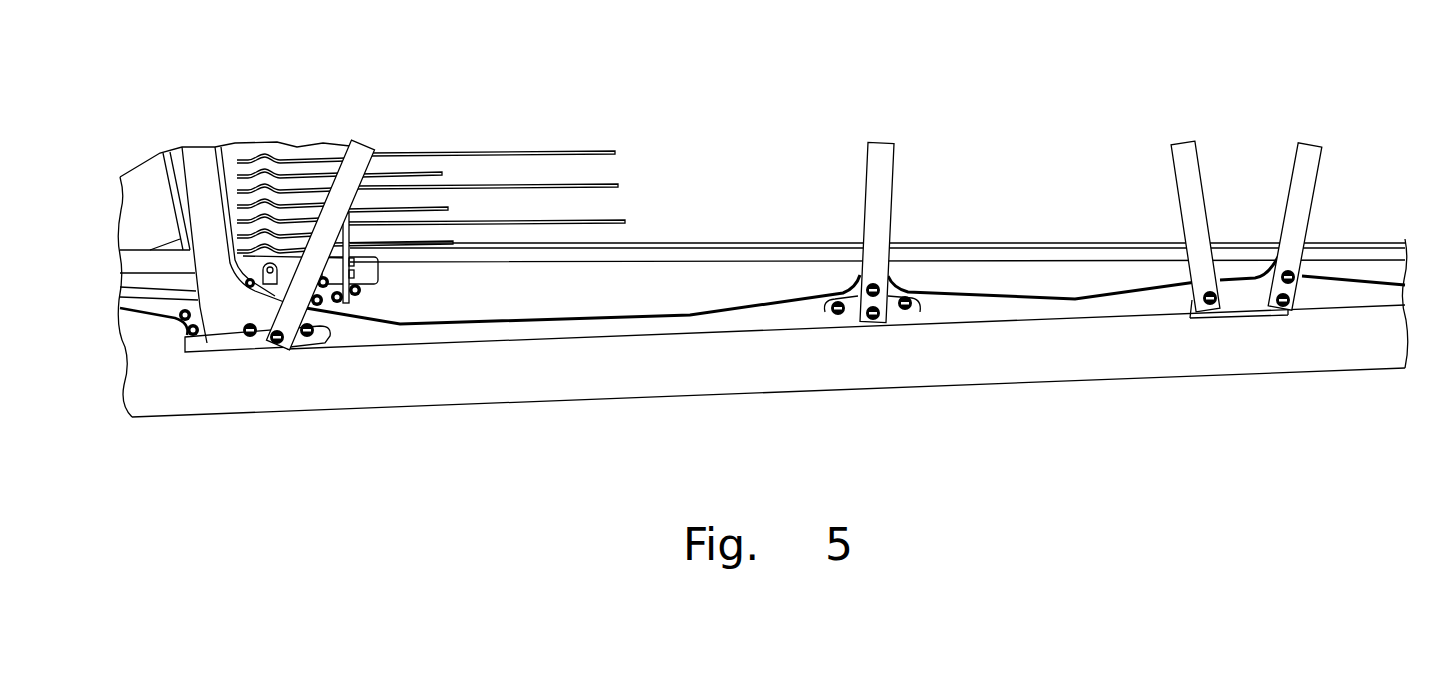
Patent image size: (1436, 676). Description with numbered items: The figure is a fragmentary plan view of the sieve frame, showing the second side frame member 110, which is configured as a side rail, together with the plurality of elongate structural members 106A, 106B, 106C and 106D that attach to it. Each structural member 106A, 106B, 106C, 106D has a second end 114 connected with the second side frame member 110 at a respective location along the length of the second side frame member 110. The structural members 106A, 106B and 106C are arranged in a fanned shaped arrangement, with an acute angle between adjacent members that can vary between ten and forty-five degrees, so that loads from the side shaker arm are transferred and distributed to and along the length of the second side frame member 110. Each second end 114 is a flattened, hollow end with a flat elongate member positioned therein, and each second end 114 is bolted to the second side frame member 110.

The elongate structural member 106A is at (362, 162).
The elongate structural member 106B is at (884, 193).
The elongate structural member 106C is at (1182, 148).
The elongate structural member 106D is at (1312, 152).
The second side frame member 110 is at (597, 372).
The second end 114 is at (295, 335).